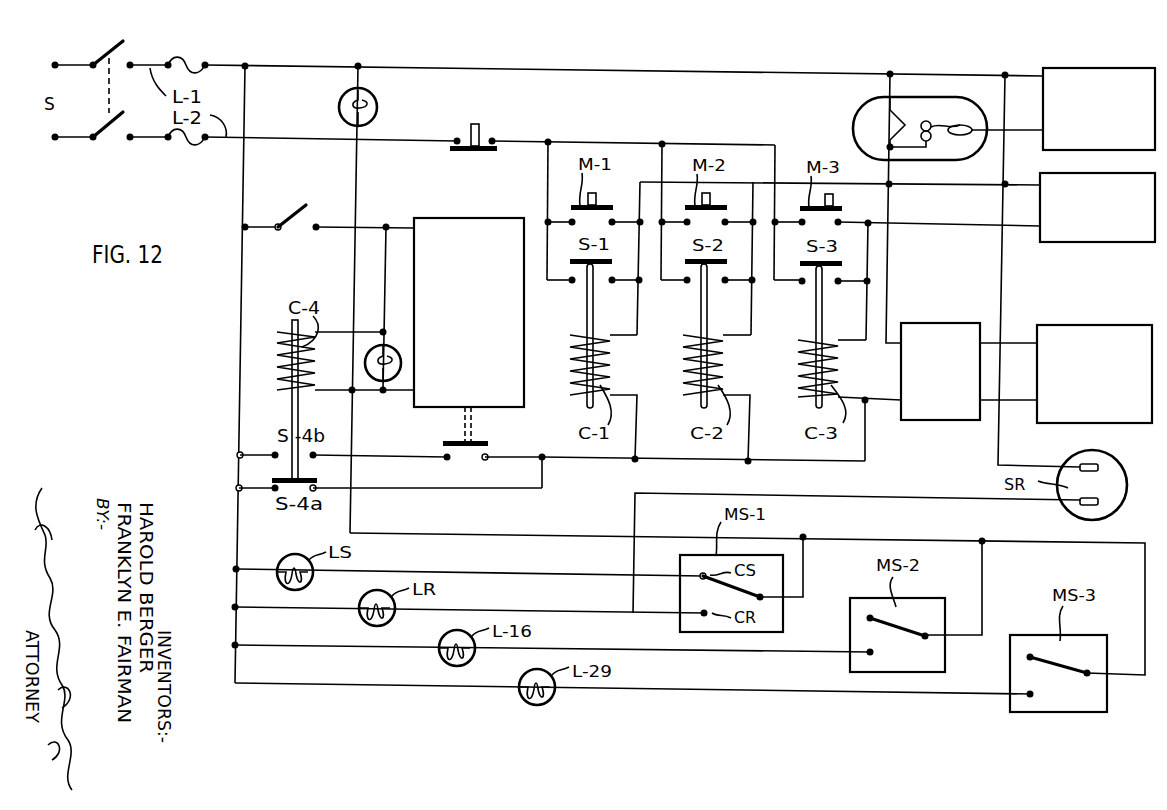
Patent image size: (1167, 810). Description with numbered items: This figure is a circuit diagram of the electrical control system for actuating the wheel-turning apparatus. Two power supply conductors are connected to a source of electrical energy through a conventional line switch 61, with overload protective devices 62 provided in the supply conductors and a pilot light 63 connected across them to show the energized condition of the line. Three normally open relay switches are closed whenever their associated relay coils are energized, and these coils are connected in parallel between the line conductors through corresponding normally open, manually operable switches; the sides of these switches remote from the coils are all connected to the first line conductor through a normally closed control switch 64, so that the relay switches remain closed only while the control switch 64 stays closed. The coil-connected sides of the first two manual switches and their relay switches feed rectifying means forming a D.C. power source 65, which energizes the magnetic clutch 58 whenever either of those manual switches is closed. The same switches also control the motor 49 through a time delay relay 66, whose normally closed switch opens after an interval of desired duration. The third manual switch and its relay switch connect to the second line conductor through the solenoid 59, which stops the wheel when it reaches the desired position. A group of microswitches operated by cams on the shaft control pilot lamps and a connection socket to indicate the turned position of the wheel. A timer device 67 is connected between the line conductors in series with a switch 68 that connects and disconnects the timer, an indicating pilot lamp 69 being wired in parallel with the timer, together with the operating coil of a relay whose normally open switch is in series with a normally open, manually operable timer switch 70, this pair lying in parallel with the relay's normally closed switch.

The motor 49 is at (1099, 109).
The magnetic clutch 58 is at (1094, 374).
The solenoid 59 is at (1097, 207).
The line switch 61 is at (108, 134).
The overload protective devices 62 is at (192, 148).
The pilot light 63 is at (339, 106).
The control switch 64 is at (473, 152).
The D.C. power source 65 is at (940, 371).
The time delay relay 66 is at (942, 160).
The timer device 67 is at (450, 229).
The switch 68 is at (294, 222).
The indicating pilot lamp 69 is at (378, 385).
The manually operable timer switch 70 is at (492, 446).